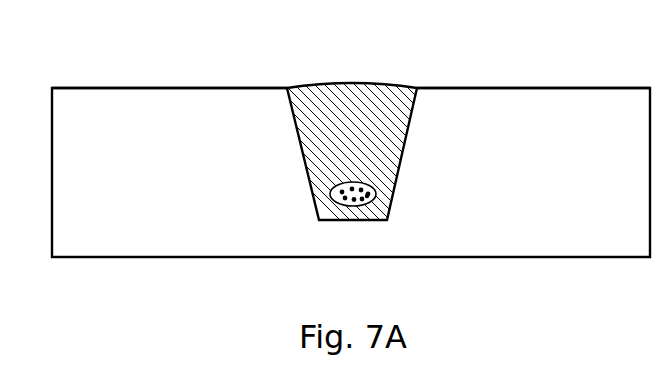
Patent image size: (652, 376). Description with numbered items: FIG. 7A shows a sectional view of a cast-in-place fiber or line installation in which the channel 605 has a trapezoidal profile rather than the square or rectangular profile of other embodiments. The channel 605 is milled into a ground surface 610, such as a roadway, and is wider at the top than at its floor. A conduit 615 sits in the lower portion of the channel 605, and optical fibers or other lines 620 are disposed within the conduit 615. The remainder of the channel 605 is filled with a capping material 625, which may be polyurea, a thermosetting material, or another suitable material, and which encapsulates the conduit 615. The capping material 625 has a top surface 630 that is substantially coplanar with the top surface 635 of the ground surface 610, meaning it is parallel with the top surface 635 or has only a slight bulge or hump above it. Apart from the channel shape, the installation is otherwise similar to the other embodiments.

The ground surface 610 is at (182, 184).
The top surface of ground surface 635 is at (147, 88).
The top surface of capping material 630 is at (348, 83).
The capping material 625 is at (368, 144).
The channel 605 is at (401, 163).
The conduit 615 is at (377, 200).
The optical fibers 620 is at (333, 263).